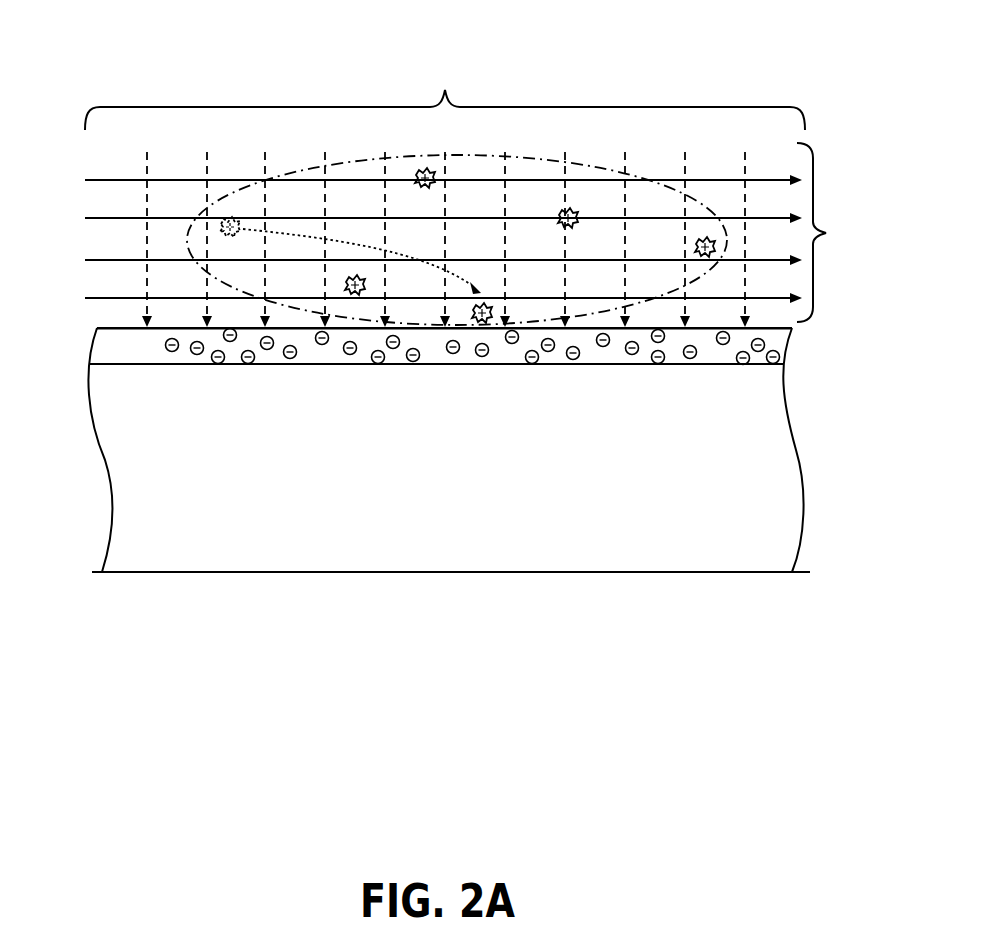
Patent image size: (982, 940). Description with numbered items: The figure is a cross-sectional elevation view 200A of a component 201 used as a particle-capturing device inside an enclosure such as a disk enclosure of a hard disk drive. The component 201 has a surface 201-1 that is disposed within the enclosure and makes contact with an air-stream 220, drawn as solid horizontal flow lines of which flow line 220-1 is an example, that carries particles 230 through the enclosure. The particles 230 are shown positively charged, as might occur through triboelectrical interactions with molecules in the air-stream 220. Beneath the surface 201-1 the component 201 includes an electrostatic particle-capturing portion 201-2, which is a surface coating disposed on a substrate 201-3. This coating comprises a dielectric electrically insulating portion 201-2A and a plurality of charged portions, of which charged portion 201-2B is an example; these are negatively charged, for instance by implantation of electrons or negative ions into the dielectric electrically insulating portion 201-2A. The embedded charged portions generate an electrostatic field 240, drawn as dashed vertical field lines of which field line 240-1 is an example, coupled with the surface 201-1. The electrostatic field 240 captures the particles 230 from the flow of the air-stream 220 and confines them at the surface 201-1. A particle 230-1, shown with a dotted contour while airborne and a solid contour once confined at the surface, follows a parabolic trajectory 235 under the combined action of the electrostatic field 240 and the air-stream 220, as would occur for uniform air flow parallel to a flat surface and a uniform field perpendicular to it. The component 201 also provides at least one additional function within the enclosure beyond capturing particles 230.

The cross-sectional elevation view 200A is at (117, 92).
The electrostatic field 240 is at (445, 194).
The field line 240-1 is at (149, 156).
The particles 230 is at (360, 165).
The particle 230-1 is at (237, 220).
The trajectory 235 is at (462, 272).
The air-stream 220 is at (477, 231).
The flow line 220-1 is at (781, 178).
The component 201 is at (96, 324).
The surface 201-1 is at (193, 327).
The electrostatic particle-capturing portion 201-2 is at (158, 357).
The dielectric electrically insulating portion 201-2A is at (775, 340).
The charged portion 201-2B is at (783, 367).
The substrate 201-3 is at (158, 402).